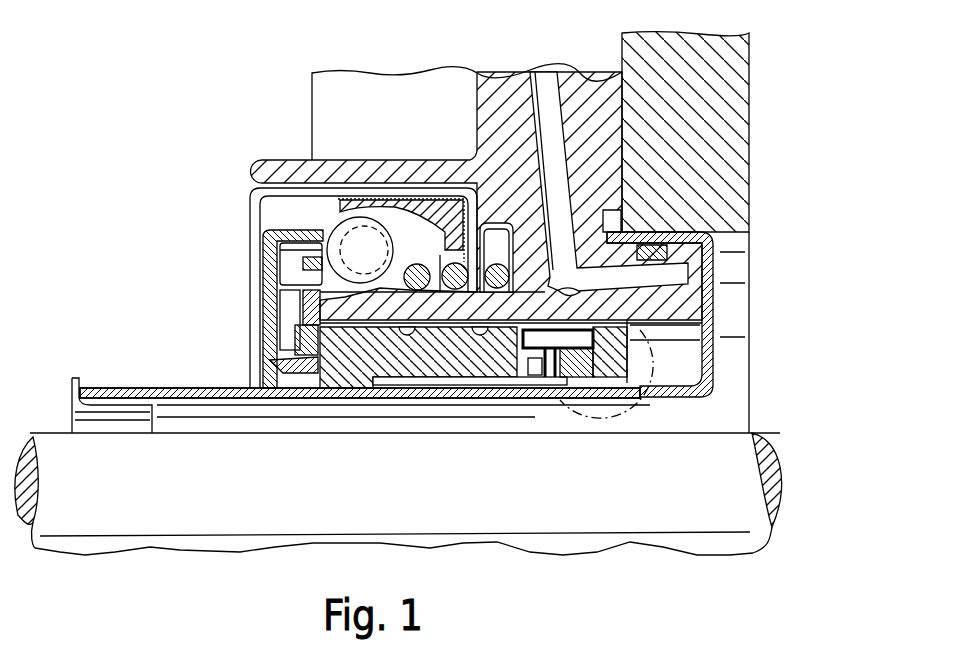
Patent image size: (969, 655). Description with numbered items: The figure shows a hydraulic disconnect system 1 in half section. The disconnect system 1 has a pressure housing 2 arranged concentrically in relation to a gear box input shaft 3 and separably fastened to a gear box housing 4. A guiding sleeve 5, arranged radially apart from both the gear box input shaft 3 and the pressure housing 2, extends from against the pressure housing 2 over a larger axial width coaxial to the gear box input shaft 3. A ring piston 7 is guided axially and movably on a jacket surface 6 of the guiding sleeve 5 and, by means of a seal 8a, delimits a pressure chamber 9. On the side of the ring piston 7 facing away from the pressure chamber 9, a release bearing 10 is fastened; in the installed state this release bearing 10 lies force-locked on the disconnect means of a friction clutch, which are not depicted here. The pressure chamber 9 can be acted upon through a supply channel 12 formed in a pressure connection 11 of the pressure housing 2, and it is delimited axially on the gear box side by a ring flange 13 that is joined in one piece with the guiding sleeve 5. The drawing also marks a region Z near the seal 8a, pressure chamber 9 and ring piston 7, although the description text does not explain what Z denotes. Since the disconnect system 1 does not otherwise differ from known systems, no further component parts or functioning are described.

The disconnect system 1 is at (180, 245).
The pressure housing 2 is at (262, 166).
The gear box input shaft 3 is at (246, 504).
The gear box housing 4 is at (735, 127).
The guiding sleeve 5 is at (120, 390).
The jacket surface 6 is at (120, 390).
The ring piston 7 is at (357, 378).
The seal 8a is at (628, 390).
The pressure chamber 9 is at (677, 357).
The release bearing 10 is at (263, 297).
The pressure connection 11 is at (488, 84).
The supply channel 12 is at (540, 80).
The ring flange 13 is at (713, 276).
The zone Z is at (612, 405).